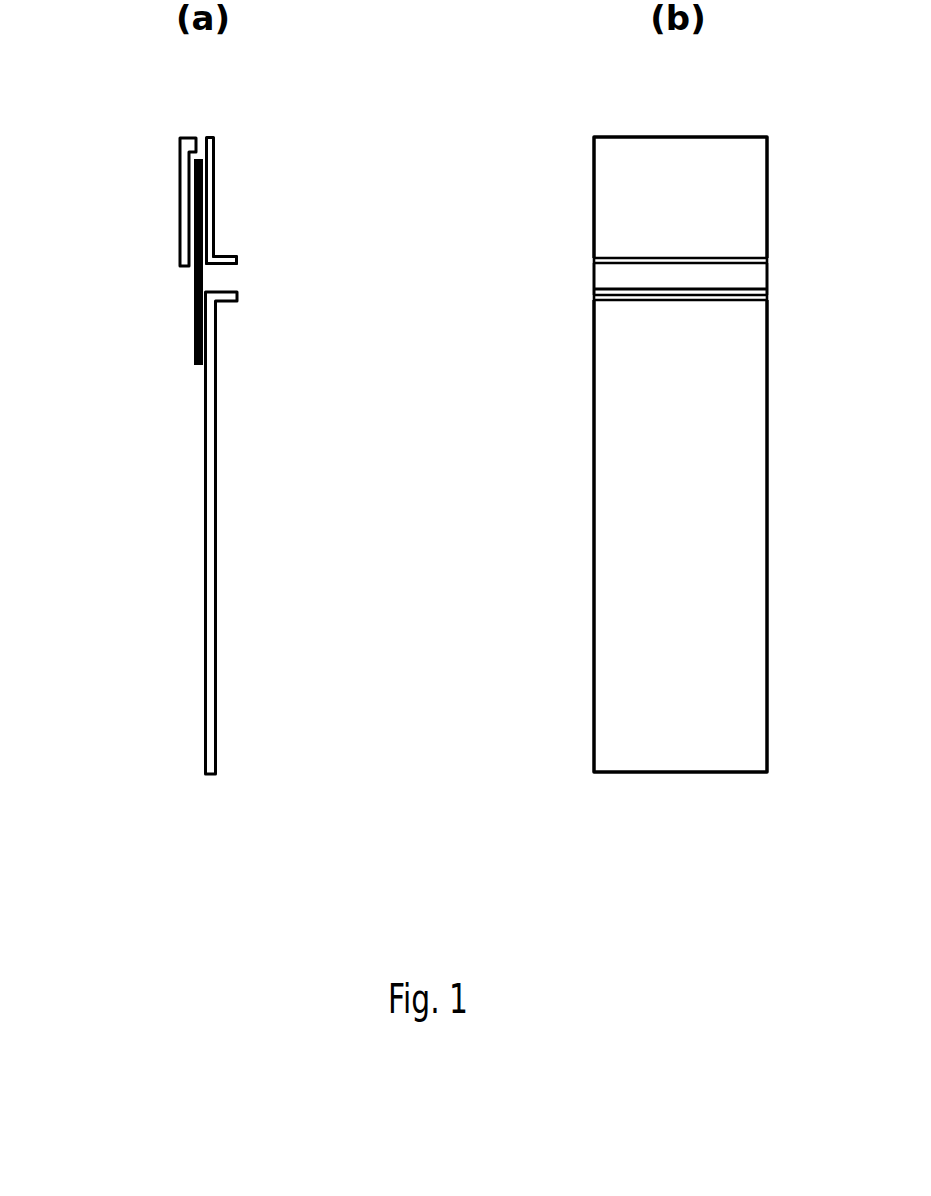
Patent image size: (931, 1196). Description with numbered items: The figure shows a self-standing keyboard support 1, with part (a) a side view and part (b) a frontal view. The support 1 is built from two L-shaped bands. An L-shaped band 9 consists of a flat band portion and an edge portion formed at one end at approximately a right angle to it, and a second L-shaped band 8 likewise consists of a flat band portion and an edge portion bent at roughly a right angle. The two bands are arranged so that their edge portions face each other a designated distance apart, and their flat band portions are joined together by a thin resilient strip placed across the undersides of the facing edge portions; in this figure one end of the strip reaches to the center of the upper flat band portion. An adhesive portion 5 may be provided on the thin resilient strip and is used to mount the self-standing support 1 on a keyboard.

The self-standing keyboard support 1 is at (133, 442).
The adhesive portion 5 is at (178, 185).
The L-shaped band 8 is at (242, 505).
The L-shaped band 9 is at (306, 213).